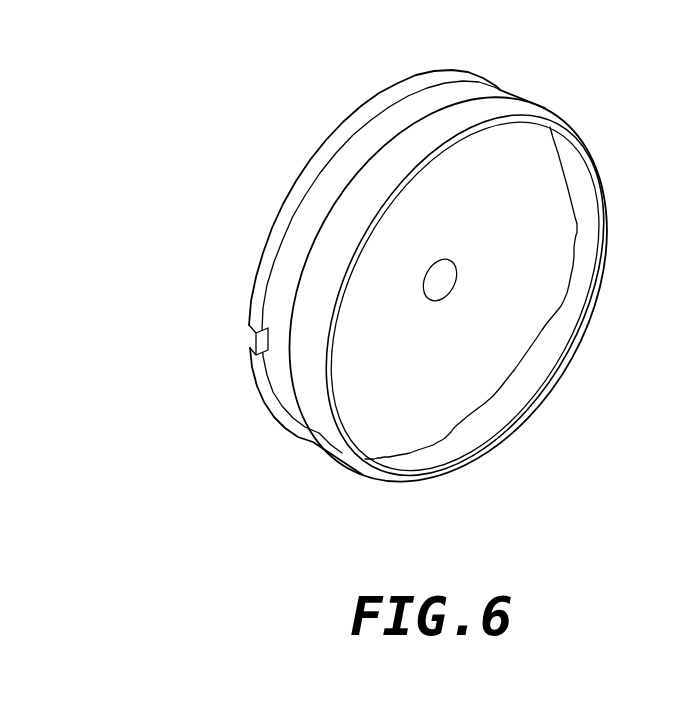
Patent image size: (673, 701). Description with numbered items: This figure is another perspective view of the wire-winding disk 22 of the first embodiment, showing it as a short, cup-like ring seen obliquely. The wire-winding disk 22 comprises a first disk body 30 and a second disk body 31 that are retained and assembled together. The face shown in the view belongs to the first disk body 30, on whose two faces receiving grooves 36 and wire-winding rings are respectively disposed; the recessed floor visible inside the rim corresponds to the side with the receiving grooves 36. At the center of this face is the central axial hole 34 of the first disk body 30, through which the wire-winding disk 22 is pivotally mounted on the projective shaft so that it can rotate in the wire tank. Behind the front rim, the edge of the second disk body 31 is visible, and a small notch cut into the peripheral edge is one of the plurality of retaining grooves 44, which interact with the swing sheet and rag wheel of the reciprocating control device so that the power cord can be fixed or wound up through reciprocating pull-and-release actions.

The wire-winding disk 22 is at (305, 160).
The first disk body 30 is at (318, 403).
The second disk body 31 is at (258, 386).
The central axial hole 34 is at (458, 277).
The receiving grooves 36 is at (502, 333).
The retaining grooves 44 is at (250, 338).